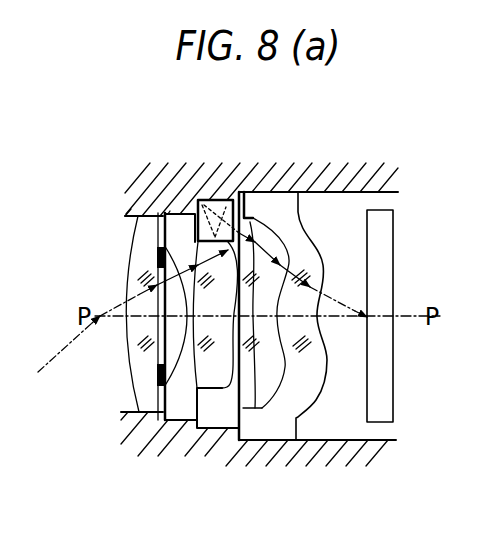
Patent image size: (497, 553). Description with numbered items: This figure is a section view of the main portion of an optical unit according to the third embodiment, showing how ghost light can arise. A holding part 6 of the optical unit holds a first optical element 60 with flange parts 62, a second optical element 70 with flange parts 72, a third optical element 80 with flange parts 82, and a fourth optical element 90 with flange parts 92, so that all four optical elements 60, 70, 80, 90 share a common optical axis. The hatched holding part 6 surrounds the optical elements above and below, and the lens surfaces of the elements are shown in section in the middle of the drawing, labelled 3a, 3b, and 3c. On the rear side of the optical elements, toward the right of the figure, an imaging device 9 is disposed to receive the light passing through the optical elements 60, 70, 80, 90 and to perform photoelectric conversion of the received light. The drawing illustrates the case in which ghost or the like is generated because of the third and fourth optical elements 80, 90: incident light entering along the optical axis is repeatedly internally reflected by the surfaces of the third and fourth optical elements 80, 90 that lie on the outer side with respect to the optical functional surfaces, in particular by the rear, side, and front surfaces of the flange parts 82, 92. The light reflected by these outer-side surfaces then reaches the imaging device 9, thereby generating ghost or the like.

The holding part 6 is at (344, 454).
The imaging device 9 is at (378, 413).
The first lens 3a is at (160, 434).
The second lens 3b is at (220, 434).
The third lens 3c is at (250, 448).
The first optical element 60 is at (128, 434).
The flange parts 62 is at (146, 220).
The second optical element 70 is at (176, 434).
The flange parts 72 is at (183, 218).
The third optical element 80 is at (242, 443).
The flange parts 82 is at (233, 210).
The fourth optical element 90 is at (279, 434).
The flange parts 92 is at (272, 205).